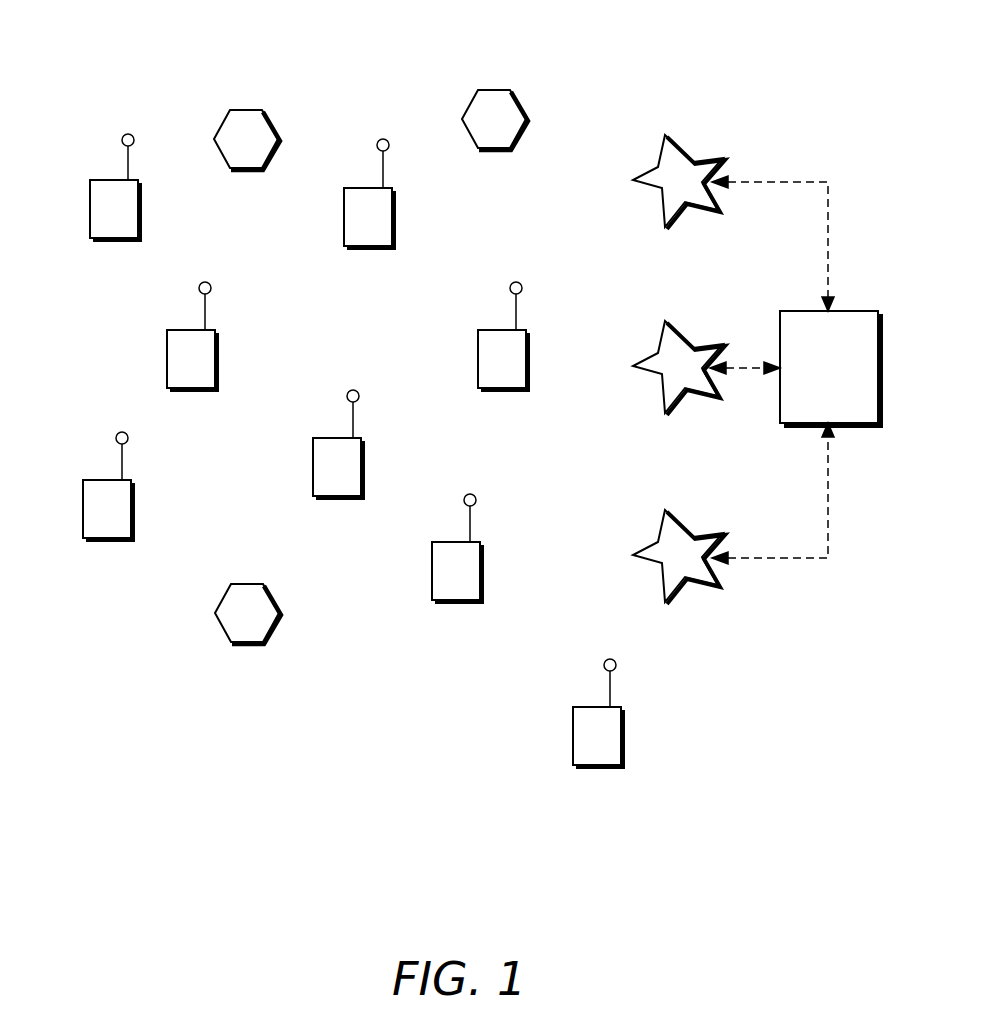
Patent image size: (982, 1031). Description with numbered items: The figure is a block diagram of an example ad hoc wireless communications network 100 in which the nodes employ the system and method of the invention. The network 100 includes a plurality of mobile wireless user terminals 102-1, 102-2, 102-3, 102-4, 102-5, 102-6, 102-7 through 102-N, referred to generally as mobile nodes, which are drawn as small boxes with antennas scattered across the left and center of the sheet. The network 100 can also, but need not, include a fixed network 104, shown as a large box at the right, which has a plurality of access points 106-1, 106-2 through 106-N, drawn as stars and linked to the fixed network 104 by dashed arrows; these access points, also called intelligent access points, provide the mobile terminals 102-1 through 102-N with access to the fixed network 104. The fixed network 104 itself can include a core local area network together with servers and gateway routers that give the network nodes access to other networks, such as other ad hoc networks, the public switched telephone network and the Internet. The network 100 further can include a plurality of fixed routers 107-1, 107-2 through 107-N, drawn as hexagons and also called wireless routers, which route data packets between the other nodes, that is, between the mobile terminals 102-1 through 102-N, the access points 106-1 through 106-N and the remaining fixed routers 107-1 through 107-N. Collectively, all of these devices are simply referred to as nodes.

The ad hoc wireless communications network 100 is at (802, 63).
The mobile wireless user terminal 102-1 is at (103, 180).
The mobile wireless user terminal 102-2 is at (357, 188).
The mobile wireless user terminal 102-3 is at (179, 330).
The mobile wireless user terminal 102-4 is at (104, 480).
The mobile wireless user terminal 102-5 is at (326, 438).
The mobile wireless user terminal 102-6 is at (490, 330).
The mobile wireless user terminal 102-7 is at (444, 542).
The mobile wireless user terminal 102-N is at (597, 769).
The fixed network 104 is at (791, 311).
The access point 106-1 is at (651, 176).
The access point 106-2 is at (649, 362).
The access point 106-N is at (649, 550).
The fixed router 107-1 is at (241, 110).
The fixed router 107-2 is at (483, 90).
The fixed router 107-N is at (242, 584).